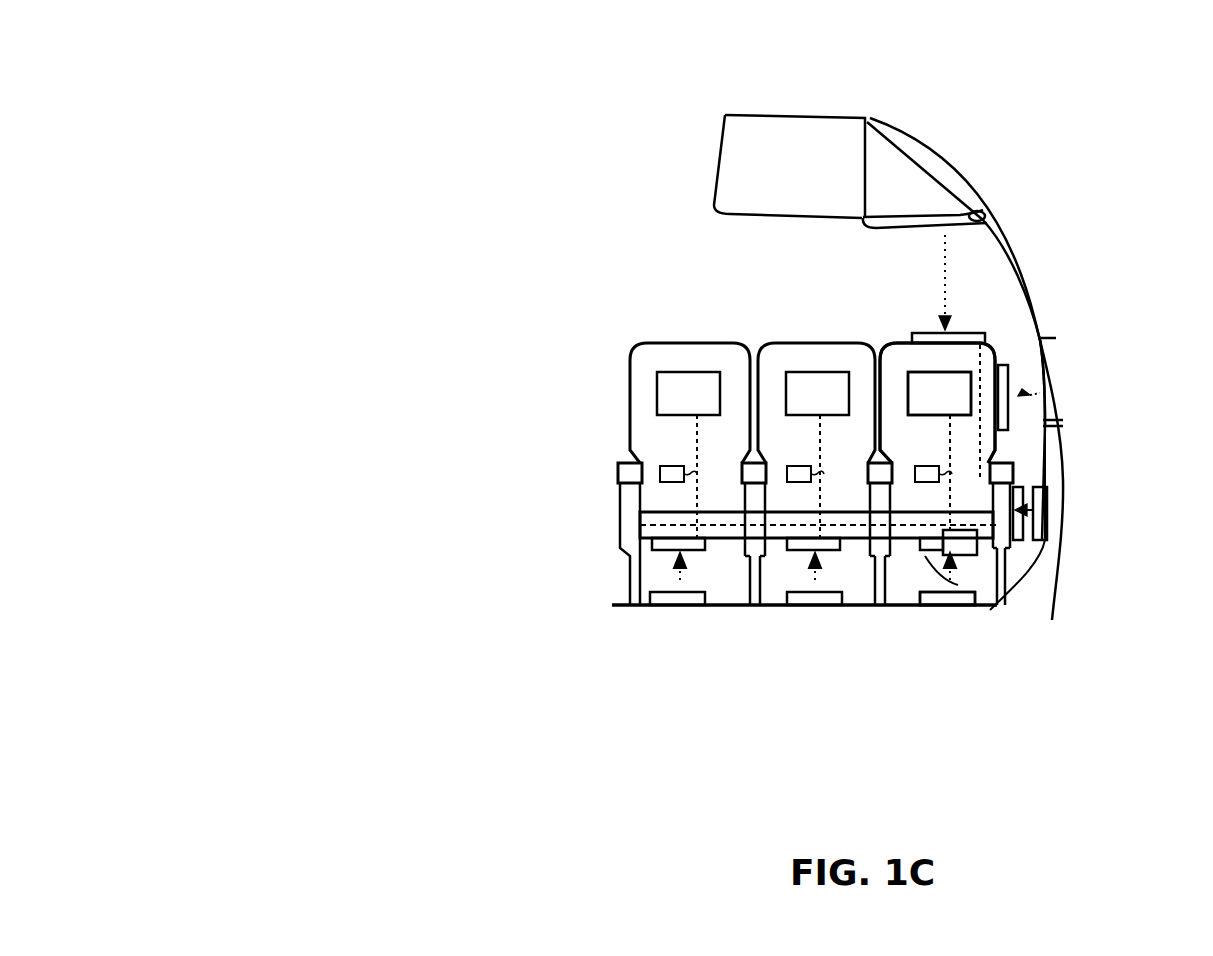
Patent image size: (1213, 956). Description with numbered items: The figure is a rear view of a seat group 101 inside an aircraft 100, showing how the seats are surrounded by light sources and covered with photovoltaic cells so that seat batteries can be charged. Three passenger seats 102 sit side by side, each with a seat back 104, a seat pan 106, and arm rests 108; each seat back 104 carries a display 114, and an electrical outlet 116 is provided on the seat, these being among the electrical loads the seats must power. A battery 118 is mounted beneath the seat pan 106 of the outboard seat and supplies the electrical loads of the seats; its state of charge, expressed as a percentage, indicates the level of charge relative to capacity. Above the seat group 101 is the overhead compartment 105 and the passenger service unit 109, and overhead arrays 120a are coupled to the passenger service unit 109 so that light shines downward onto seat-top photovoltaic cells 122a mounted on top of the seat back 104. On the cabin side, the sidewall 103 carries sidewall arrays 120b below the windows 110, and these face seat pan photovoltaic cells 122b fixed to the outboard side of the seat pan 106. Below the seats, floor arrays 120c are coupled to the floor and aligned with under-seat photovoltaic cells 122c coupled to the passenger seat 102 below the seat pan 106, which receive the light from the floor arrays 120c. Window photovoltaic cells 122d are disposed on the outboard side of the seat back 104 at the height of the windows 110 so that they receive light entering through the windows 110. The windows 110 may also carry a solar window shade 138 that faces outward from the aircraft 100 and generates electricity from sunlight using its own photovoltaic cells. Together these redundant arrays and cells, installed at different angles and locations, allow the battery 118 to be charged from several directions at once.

The aircraft 100 is at (255, 37).
The seat group 101 is at (548, 364).
The passenger seat 102 is at (893, 345).
The sidewall 103 is at (1055, 432).
The seat back 104 is at (648, 345).
The overhead compartment 105 is at (775, 135).
The seat pan 106 is at (640, 527).
The arm rests 108 is at (620, 470).
The passenger service unit 109 is at (907, 183).
The windows 110 is at (1055, 378).
The displays 114 is at (905, 383).
The electrical outlets 116 is at (912, 474).
The batteries 118 is at (965, 556).
The arrays (overhead arrays) 120a is at (992, 208).
The arrays (sidewall arrays) 120b is at (1042, 530).
The arrays (floor arrays) 120c is at (960, 606).
The photovoltaic cells (seat-top photovoltaic cells) 122a is at (975, 330).
The photovoltaic cells (seat pan photovoltaic cells) 122b is at (1022, 496).
The photovoltaic cells (under-seat photovoltaic cells) 122c is at (925, 556).
The photovoltaic cells (window photovoltaic cells) 122d is at (1012, 400).
The solar window shade 138 is at (1042, 382).